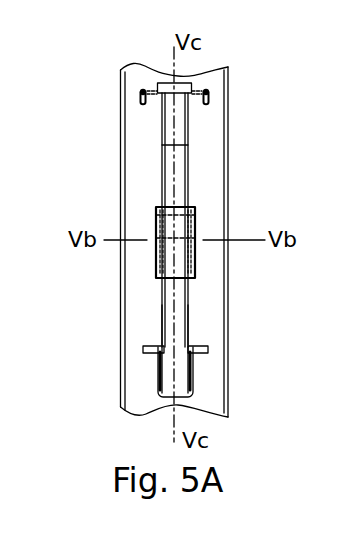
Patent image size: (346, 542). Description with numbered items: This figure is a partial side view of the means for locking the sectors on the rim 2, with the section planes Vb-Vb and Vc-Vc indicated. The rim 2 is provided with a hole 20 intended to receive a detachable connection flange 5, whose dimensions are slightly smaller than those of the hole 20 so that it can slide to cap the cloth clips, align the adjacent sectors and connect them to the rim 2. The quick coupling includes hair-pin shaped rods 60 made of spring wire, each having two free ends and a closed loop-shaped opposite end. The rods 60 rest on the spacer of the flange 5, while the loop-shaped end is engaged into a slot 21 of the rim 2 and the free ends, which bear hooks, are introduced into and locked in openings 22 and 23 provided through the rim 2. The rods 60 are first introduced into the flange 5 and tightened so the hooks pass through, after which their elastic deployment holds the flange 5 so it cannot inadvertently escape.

The rim 2 is at (248, 285).
The detachable connection flange 5 is at (157, 227).
The hole 20 is at (188, 203).
The slot 21 is at (208, 349).
The opening 22 is at (180, 90).
The opening 23 is at (141, 100).
The hair-pin shaped rod 60 is at (190, 318).